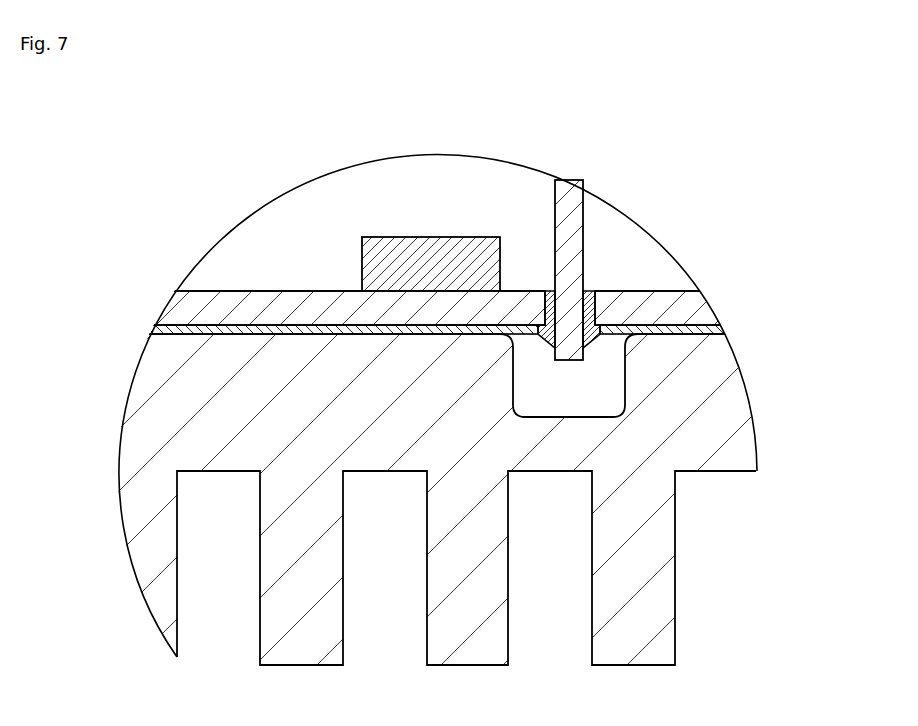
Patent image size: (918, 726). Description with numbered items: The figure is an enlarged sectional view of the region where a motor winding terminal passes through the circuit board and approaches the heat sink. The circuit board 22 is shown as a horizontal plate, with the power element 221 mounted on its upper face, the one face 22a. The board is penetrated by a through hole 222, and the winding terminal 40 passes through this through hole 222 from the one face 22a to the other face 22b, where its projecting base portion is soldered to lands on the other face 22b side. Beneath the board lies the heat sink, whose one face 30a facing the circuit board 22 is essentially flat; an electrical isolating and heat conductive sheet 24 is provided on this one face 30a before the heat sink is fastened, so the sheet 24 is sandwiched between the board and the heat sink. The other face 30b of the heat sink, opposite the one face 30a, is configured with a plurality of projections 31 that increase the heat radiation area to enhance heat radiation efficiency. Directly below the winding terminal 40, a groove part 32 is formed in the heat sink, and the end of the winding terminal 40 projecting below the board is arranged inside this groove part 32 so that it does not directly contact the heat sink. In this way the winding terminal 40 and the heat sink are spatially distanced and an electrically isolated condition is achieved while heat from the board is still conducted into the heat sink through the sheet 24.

The circuit board 22 is at (662, 303).
The one face of the circuit board 22a is at (268, 290).
The other face of the circuit board 22b is at (210, 325).
The power element 221 is at (413, 238).
The through hole 222 is at (592, 292).
The electrical isolating and heat conductive sheet 24 is at (215, 336).
The one face of the heat sink 30a is at (688, 338).
The other face of the heat sink 30b is at (713, 472).
The projection 31 is at (658, 605).
The groove part 32 is at (585, 395).
The winding terminal 40 is at (567, 193).